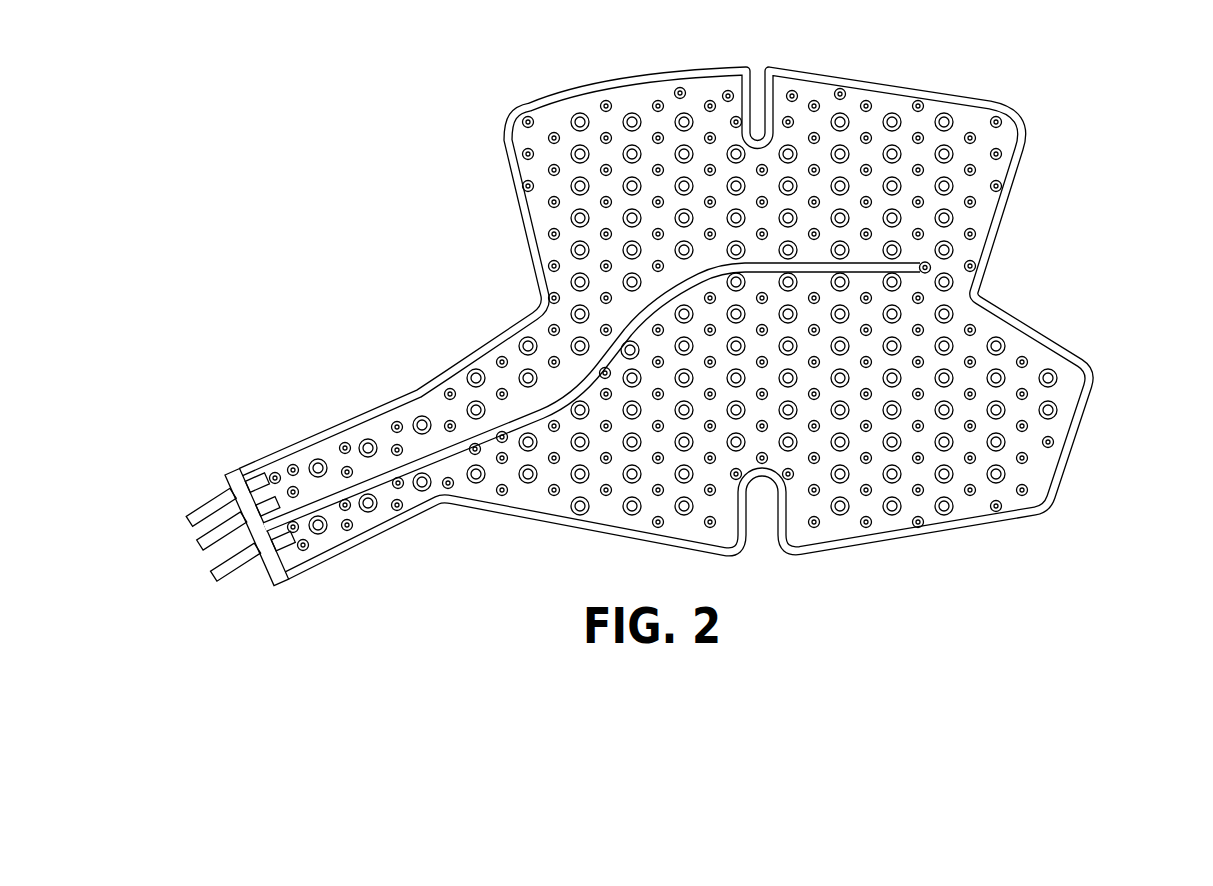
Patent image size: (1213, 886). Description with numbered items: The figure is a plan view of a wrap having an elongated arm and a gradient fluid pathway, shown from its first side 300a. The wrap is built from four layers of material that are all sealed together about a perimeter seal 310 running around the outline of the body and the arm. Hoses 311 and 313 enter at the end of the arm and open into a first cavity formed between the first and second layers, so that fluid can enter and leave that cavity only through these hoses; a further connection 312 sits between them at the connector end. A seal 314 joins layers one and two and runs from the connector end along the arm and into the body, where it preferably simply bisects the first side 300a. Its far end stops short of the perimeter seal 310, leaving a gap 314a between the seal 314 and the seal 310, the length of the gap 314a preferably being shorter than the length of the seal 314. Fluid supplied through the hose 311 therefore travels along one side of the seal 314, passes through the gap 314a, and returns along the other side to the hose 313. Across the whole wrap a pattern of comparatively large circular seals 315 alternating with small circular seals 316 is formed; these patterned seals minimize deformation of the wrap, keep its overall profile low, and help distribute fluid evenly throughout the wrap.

The first side of the wrap 300a is at (630, 331).
The perimeter seal 310 is at (899, 86).
The hose 311 is at (189, 520).
The second lead wire 312 is at (200, 544).
The hose 313 is at (214, 577).
The seal 314 is at (931, 262).
The gap 314a is at (957, 273).
The large circular seals 315 is at (578, 112).
The small circular seals 316 is at (551, 131).